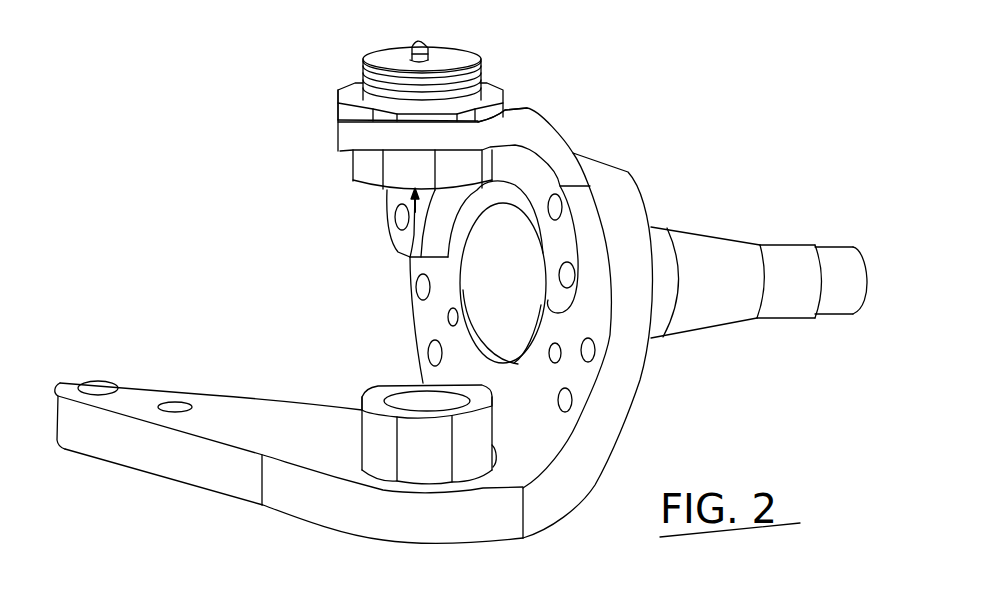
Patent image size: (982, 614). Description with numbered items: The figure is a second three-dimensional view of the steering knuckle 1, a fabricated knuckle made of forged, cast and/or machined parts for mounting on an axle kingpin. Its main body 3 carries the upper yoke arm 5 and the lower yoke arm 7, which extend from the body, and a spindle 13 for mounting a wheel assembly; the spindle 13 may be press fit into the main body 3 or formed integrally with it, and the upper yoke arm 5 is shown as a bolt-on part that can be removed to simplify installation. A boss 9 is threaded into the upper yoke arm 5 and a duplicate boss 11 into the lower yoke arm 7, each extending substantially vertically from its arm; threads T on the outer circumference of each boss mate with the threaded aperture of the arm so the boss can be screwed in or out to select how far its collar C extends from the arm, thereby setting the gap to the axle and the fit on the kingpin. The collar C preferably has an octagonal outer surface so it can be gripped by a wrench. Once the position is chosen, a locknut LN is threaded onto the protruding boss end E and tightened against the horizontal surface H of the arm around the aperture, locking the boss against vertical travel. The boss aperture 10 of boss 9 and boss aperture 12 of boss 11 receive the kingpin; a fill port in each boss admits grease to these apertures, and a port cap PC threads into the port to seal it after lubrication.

The steering knuckle 1 is at (682, 104).
The main body 3 is at (620, 378).
The upper yoke arm 5 is at (380, 133).
The lower yoke arm 7 is at (480, 530).
The boss 9 is at (368, 170).
The boss aperture 10 is at (400, 250).
The boss 11 is at (372, 426).
The boss aperture 12 is at (407, 400).
The spindle 13 is at (700, 257).
The locknut LN is at (353, 85).
The threads T is at (480, 78).
The boss end E is at (460, 60).
The port cap PC is at (420, 42).
The horizontal surface H is at (505, 108).
The collar C is at (393, 177).